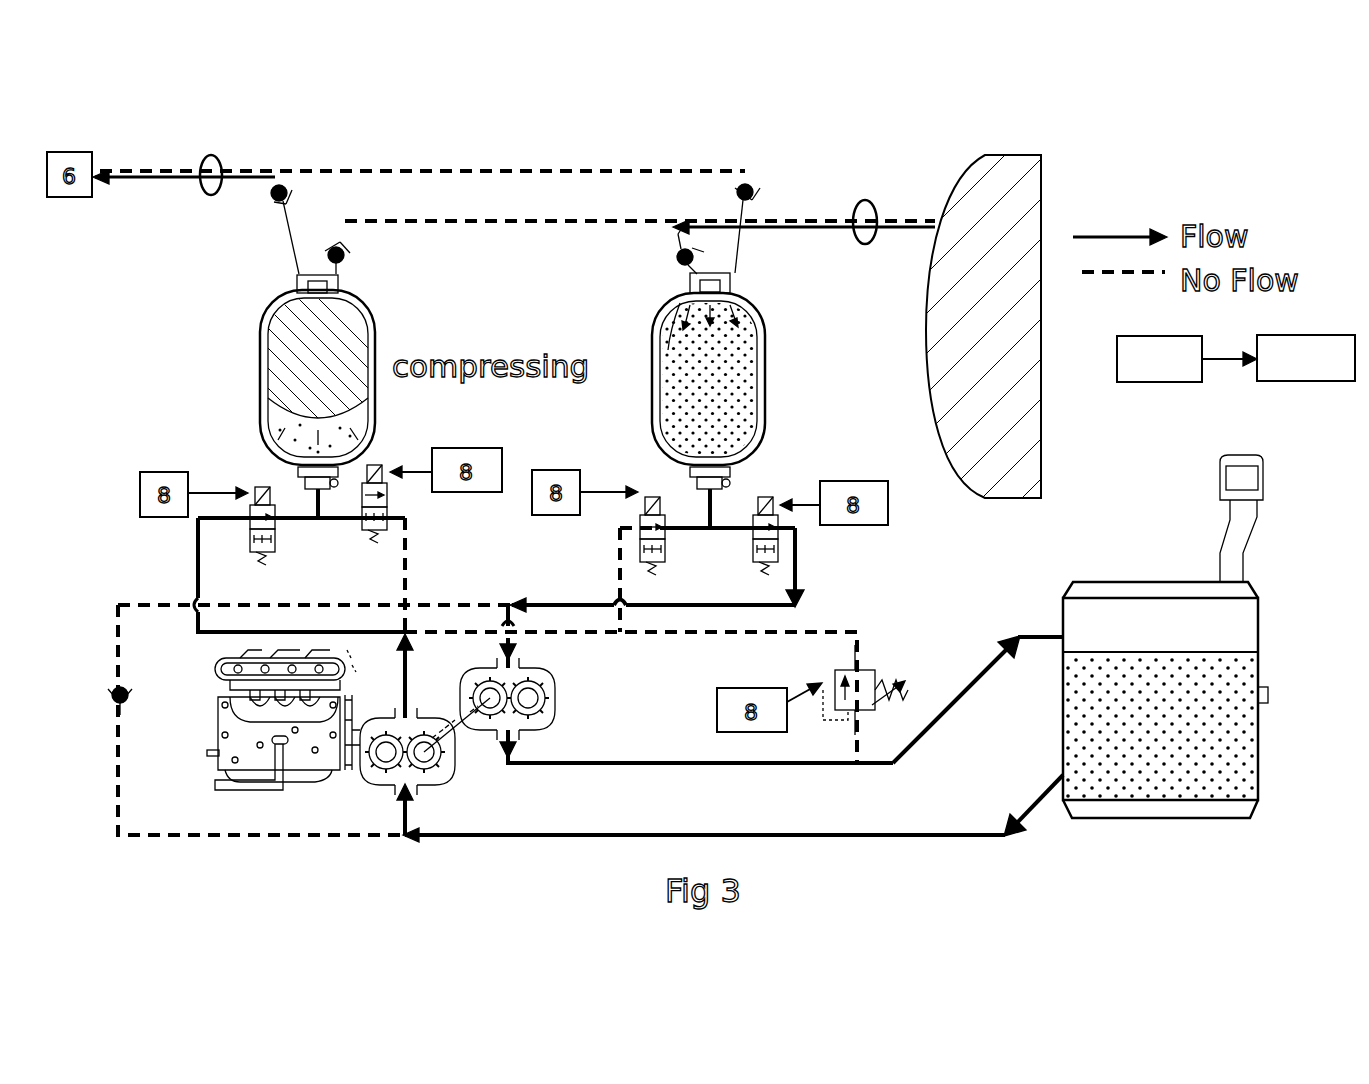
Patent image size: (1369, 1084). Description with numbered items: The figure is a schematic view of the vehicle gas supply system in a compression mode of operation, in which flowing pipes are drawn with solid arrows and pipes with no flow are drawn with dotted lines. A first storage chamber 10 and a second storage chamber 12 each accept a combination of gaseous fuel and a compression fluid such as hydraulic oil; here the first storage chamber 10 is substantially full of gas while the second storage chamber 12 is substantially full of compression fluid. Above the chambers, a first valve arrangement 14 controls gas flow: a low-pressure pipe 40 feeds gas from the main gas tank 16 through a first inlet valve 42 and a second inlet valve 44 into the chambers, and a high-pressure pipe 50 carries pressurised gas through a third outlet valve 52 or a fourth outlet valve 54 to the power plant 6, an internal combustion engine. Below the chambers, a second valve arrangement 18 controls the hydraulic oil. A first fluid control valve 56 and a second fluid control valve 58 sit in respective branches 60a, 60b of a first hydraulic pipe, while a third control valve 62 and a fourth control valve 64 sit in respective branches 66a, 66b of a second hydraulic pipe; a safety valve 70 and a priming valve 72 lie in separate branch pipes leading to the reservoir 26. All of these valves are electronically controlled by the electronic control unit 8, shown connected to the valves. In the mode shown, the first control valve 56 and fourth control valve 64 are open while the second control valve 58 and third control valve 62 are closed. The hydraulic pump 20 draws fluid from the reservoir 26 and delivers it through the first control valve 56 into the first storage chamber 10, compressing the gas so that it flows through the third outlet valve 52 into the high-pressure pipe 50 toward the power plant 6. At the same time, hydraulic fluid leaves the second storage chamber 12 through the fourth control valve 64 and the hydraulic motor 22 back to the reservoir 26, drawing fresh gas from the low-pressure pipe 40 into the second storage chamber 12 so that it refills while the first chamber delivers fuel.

The power plant 6 is at (228, 731).
The electronic control unit 8 is at (1135, 382).
The first storage chamber 10 is at (262, 358).
The second storage chamber 12 is at (660, 349).
The first valve arrangement 14 is at (716, 152).
The main gas tank 16 is at (1000, 380).
The second valve arrangement 18 is at (140, 528).
The hydraulic pump 20 is at (455, 770).
The hydraulic motor 22 is at (555, 682).
The reservoir 26 is at (1165, 636).
The low-pressure pipe 40 is at (864, 246).
The first inlet valve 42 is at (348, 262).
The second inlet valve 44 is at (675, 261).
The high-pressure pipe 50 is at (214, 154).
The third outlet valve 52 is at (270, 200).
The fourth outlet valve 54 is at (756, 190).
The first fluid control valve 56 is at (276, 534).
The second fluid control valve 58 is at (642, 514).
The first branch of first hydraulic pipe 60a is at (197, 558).
The second branch of first hydraulic pipe 60b is at (615, 586).
The third control valve 62 is at (390, 496).
The fourth control valve 64 is at (752, 545).
The first branch of second hydraulic pipe 66a is at (410, 578).
The second branch of second hydraulic pipe 66b is at (797, 566).
The safety valve 70 is at (870, 668).
The priming valve 72 is at (112, 702).